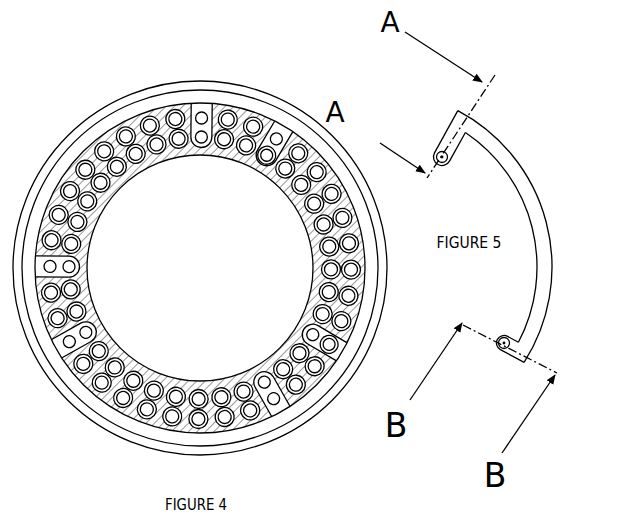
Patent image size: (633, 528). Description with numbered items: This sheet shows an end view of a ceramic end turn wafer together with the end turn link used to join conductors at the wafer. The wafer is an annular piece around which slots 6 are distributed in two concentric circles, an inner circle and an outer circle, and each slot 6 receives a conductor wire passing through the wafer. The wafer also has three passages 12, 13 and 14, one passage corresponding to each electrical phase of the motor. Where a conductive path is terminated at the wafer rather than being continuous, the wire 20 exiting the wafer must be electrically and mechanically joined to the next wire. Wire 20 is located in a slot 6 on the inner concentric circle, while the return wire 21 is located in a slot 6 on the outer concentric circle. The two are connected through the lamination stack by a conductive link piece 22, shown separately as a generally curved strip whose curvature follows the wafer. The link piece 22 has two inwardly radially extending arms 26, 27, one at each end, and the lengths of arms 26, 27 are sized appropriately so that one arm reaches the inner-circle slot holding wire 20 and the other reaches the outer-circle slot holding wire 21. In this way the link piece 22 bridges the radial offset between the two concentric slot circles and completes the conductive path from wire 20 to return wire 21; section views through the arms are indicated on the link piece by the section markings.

In FIG. 4, the slots 6 is at (150, 126).
In FIG. 4, the passage 12 is at (82, 138).
In FIG. 4, the passage 13 is at (365, 299).
In FIG. 4, the passage 14 is at (85, 393).
In FIG. 4, the wire 20 is at (266, 148).
In FIG. 4, the return wire 21 is at (338, 345).
In FIG. 5, the conductive link piece 22 is at (523, 187).
In FIG. 5, the arm 26 is at (450, 125).
In FIG. 5, the arm 27 is at (518, 347).